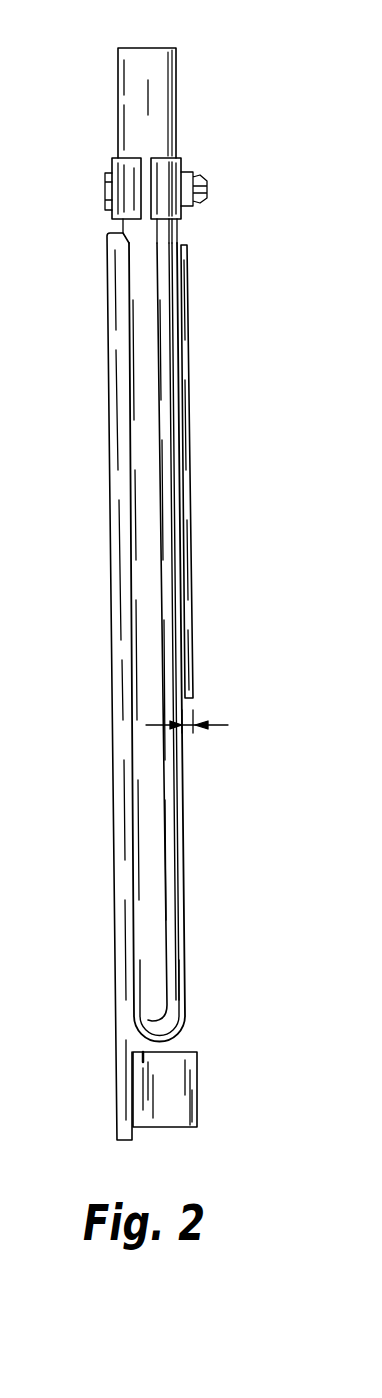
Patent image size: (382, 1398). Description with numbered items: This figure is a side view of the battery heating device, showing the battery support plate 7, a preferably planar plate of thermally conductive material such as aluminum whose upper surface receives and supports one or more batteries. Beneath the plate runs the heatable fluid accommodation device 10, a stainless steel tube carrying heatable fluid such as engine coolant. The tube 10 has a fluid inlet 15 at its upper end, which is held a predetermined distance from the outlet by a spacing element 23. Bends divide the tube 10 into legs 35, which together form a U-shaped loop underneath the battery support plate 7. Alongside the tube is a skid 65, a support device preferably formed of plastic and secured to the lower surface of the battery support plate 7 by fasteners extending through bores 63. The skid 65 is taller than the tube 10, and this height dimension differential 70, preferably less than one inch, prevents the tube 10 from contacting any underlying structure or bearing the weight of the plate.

The fluid inlet 15 is at (138, 47).
The spacing element 23 is at (113, 166).
The heatable fluid accommodation device 10 is at (140, 477).
The skid 65 is at (189, 476).
The battery support plate 7 is at (118, 628).
The height dimension differential 70 is at (193, 733).
The legs 35 is at (143, 845).
The bores 63 is at (165, 1113).